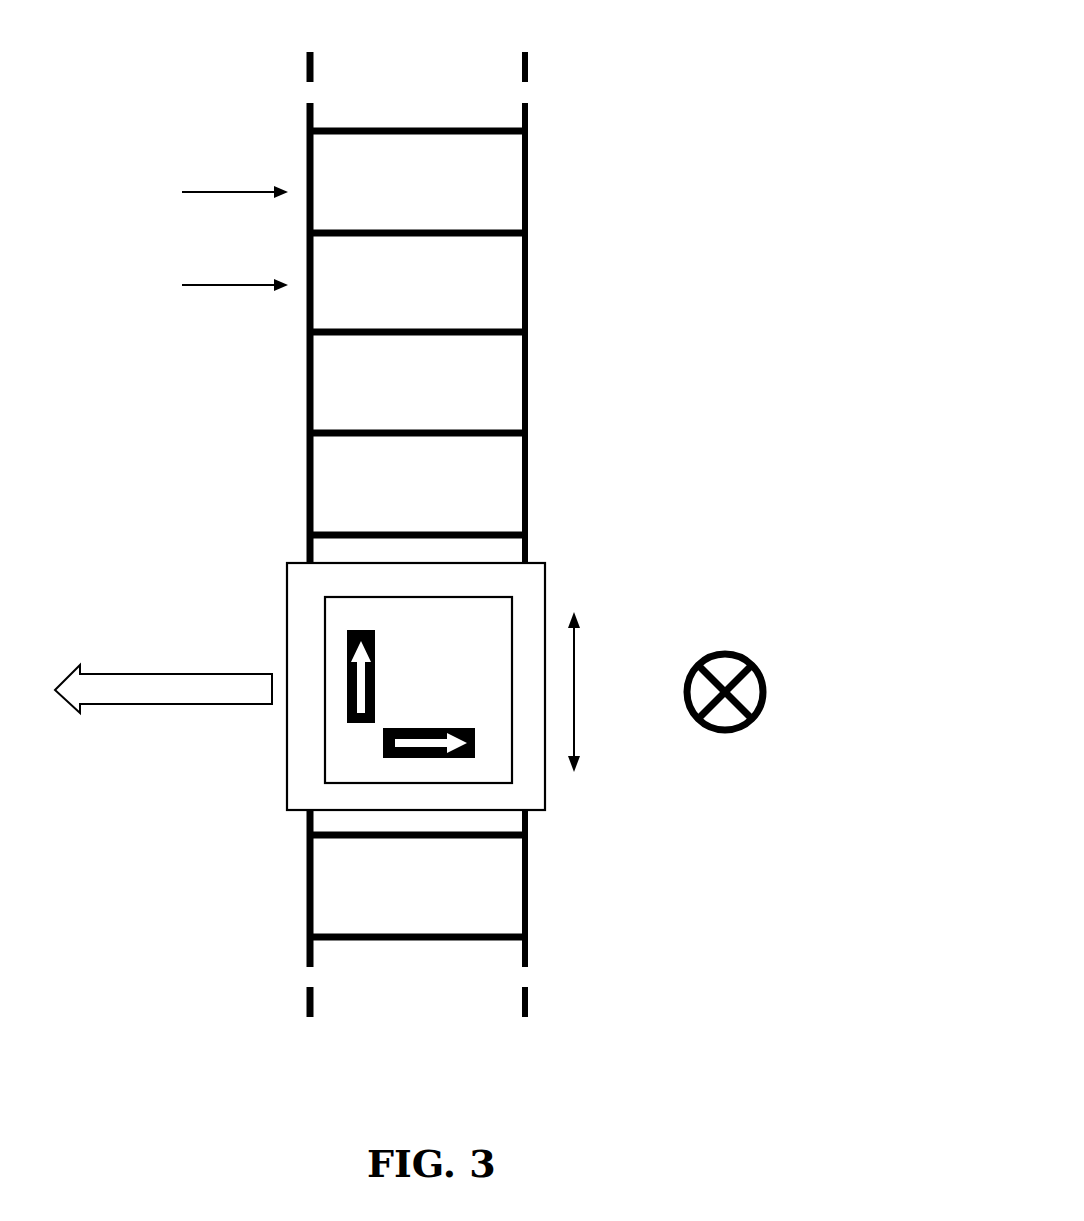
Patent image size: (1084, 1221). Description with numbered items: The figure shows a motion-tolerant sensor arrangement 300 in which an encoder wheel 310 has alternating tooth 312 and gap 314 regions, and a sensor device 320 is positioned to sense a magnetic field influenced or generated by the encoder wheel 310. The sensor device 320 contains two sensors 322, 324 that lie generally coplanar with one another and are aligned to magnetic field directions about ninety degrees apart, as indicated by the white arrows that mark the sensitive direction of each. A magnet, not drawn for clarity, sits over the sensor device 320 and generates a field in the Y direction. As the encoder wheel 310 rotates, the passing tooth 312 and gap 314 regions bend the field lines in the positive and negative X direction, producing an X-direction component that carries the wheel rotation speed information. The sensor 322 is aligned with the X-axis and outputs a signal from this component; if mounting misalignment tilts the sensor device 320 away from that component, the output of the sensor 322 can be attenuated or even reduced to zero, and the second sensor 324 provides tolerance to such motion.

The sensor arrangement 300 is at (692, 37).
The encoder wheel 310 is at (525, 53).
The tooth 312 is at (528, 288).
The gap 314 is at (528, 180).
The sensor device 320 is at (545, 563).
The sensor 322 is at (354, 630).
The sensor 324 is at (385, 728).